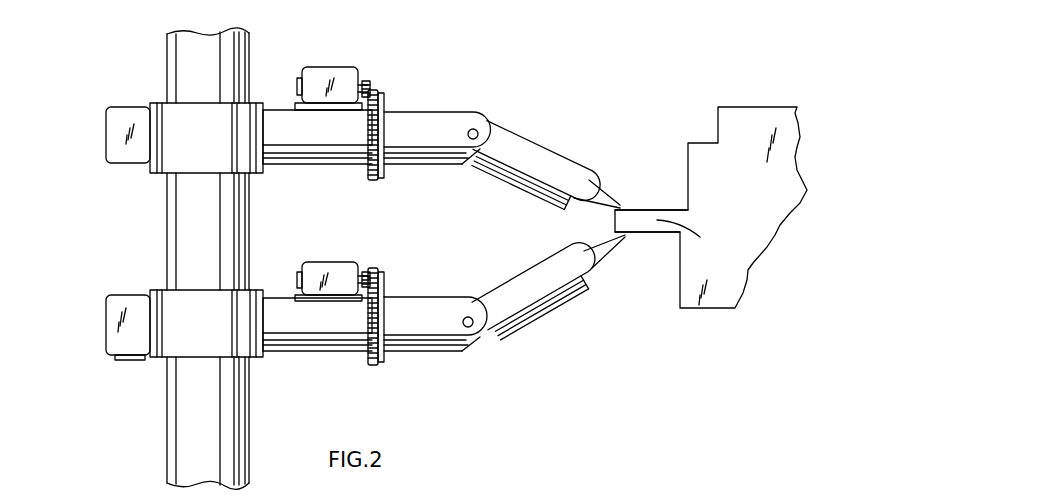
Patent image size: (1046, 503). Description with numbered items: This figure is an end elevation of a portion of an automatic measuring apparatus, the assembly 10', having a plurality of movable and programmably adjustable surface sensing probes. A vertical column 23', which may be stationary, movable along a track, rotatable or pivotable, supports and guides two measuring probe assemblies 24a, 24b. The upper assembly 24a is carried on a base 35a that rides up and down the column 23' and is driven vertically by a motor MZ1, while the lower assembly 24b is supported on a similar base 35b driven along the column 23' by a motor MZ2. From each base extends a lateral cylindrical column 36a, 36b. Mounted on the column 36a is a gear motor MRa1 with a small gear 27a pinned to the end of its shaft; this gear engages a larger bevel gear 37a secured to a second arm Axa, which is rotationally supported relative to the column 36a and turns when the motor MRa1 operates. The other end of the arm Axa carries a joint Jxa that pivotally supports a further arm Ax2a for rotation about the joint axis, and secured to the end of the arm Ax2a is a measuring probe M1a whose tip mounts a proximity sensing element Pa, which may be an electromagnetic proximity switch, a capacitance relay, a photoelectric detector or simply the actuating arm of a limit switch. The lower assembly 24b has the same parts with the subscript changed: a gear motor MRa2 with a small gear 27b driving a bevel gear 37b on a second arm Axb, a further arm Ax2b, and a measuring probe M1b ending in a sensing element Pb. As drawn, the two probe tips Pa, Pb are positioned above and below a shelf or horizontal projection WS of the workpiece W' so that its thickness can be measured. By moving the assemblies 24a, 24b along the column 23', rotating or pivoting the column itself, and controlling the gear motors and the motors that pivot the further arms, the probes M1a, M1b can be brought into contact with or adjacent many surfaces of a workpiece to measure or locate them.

The vertical column 23' is at (238, 248).
The motor MZ1 is at (120, 132).
The motor MZ2 is at (125, 340).
The base 35a is at (190, 158).
The base 35b is at (188, 341).
The lateral cylindrical column 36a is at (317, 137).
The lateral cylindrical column 36b is at (317, 324).
The assembly 10' is at (464, 188).
The measuring probe assembly 24a is at (423, 42).
The measuring probe assembly 24b is at (430, 244).
The gear motor MRa1 is at (318, 80).
The gear motor MRa2 is at (322, 270).
The small gear 27a is at (372, 84).
The small gear 27b is at (372, 274).
The bevel gear 37a is at (466, 115).
The bevel gear 37b is at (435, 313).
The second arm Axa is at (437, 138).
The second arm Axb is at (386, 298).
The joint Jxa is at (479, 130).
The further arm Ax2a is at (545, 150).
The further arm Ax2b is at (524, 297).
The measuring probe M1a is at (594, 193).
The measuring probe M1b is at (602, 254).
The proximity sensing element Pa is at (624, 208).
The proximity sensing element Pb is at (627, 235).
The workpiece W' is at (711, 207).
The shelf WS is at (697, 241).